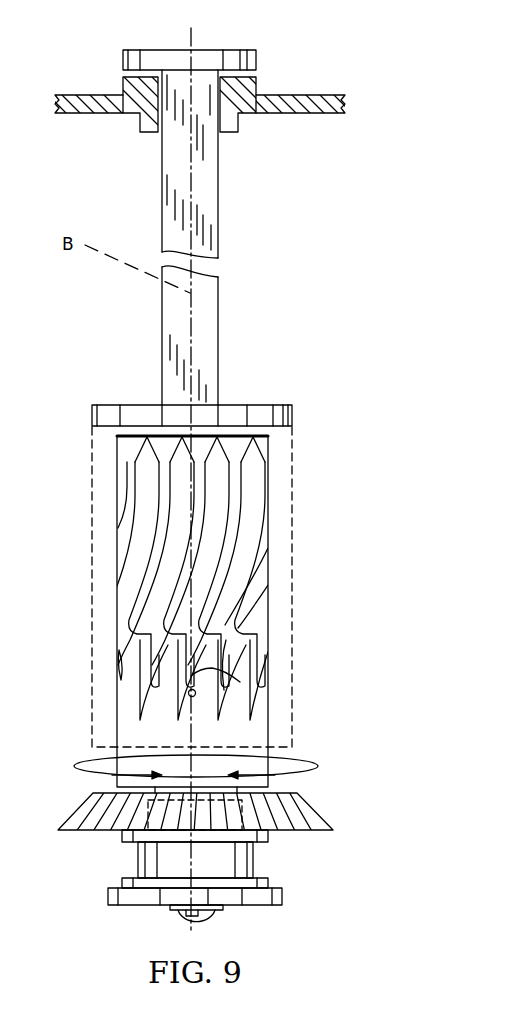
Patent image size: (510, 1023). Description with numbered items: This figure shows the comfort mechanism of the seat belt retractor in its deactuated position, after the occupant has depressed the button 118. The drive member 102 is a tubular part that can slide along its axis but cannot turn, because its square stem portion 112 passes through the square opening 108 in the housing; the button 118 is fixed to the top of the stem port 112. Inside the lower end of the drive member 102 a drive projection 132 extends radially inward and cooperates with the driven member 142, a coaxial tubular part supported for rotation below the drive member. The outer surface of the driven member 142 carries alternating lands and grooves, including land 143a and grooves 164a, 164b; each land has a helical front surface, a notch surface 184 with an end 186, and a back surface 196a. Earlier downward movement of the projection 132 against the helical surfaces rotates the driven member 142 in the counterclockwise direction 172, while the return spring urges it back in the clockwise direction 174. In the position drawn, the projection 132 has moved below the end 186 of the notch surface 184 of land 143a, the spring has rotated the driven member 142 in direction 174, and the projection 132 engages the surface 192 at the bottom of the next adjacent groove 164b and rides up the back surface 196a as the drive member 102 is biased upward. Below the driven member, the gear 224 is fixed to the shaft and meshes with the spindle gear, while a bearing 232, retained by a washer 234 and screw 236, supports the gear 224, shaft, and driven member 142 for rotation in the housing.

The drive member 102 is at (286, 397).
The opening 108 is at (215, 112).
The stem portion 112 is at (210, 330).
The button 118 is at (243, 58).
The drive projection 132 is at (188, 693).
The driven member 142 is at (282, 726).
The land 143a is at (257, 487).
The groove 164a is at (217, 572).
The next adjacent groove 164b is at (252, 583).
The counterclockwise direction 172 is at (90, 770).
The clockwise direction 174 is at (318, 762).
The notch surface 184 is at (223, 635).
The end of notch surface 186 is at (193, 680).
The surface defining bottom of groove 192 is at (175, 706).
The back surface 196a is at (235, 603).
The gear 224 is at (297, 810).
The bearing 232 is at (263, 880).
The washer 234 is at (267, 895).
The screw 236 is at (207, 915).